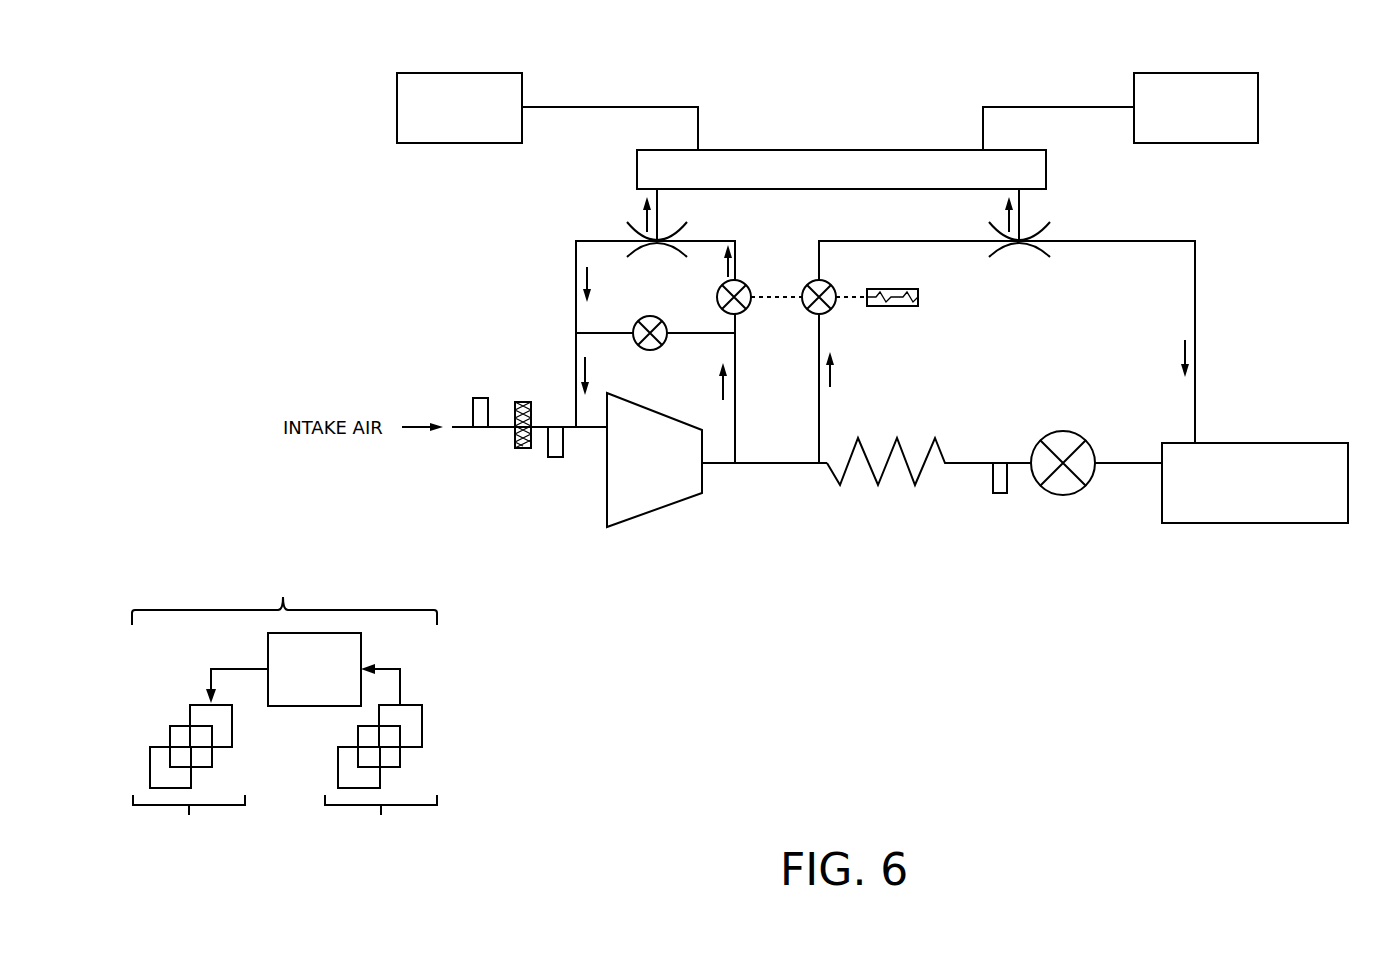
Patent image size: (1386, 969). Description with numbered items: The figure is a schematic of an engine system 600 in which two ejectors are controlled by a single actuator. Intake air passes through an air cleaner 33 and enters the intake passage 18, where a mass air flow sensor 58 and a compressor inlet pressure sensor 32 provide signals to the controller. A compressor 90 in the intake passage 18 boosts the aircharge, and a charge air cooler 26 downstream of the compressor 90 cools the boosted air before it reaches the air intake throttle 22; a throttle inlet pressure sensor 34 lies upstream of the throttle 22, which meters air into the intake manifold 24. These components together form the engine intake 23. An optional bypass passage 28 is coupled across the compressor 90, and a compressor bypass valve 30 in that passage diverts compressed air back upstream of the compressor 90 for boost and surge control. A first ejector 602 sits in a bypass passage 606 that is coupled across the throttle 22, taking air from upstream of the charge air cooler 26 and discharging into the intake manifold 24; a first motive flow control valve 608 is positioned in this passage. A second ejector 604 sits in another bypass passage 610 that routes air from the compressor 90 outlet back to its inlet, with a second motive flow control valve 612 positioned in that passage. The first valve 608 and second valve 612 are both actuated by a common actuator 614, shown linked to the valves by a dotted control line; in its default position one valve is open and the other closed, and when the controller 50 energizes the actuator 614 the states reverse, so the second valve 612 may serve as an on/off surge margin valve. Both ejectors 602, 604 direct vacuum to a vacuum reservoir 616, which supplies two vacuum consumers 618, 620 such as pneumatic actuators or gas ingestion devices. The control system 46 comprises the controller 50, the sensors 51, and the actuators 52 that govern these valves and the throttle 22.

The engine system 600 is at (400, 265).
The first ejector 602 is at (1050, 223).
The second ejector 604 is at (687, 223).
The bypass passage 606 is at (1195, 262).
The first motive flow control valve 608 is at (831, 285).
The bypass passage 610 is at (576, 262).
The second motive flow control valve 612 is at (745, 285).
The actuator 614 is at (918, 300).
The vacuum reservoir 616 is at (826, 181).
The vacuum consumer 618 is at (512, 72).
The vacuum consumer 620 is at (1250, 71).
The intake passage 18 is at (763, 450).
The air intake throttle 22 is at (1056, 431).
The engine intake 23 is at (893, 565).
The intake manifold 24 is at (1243, 493).
The charge air cooler 26 is at (932, 446).
The bypass passage 28 is at (590, 332).
The compressor bypass valve 30 is at (651, 316).
The compressor inlet pressure sensor 32 is at (555, 458).
The air cleaner 33 is at (523, 449).
The throttle inlet pressure sensor 34 is at (999, 495).
The control system 46 is at (284, 581).
The controller 50 is at (302, 681).
The sensors 51 is at (381, 792).
The actuators 52 is at (197, 792).
The mass air flow sensor 58 is at (483, 398).
The compressor 90 is at (641, 471).